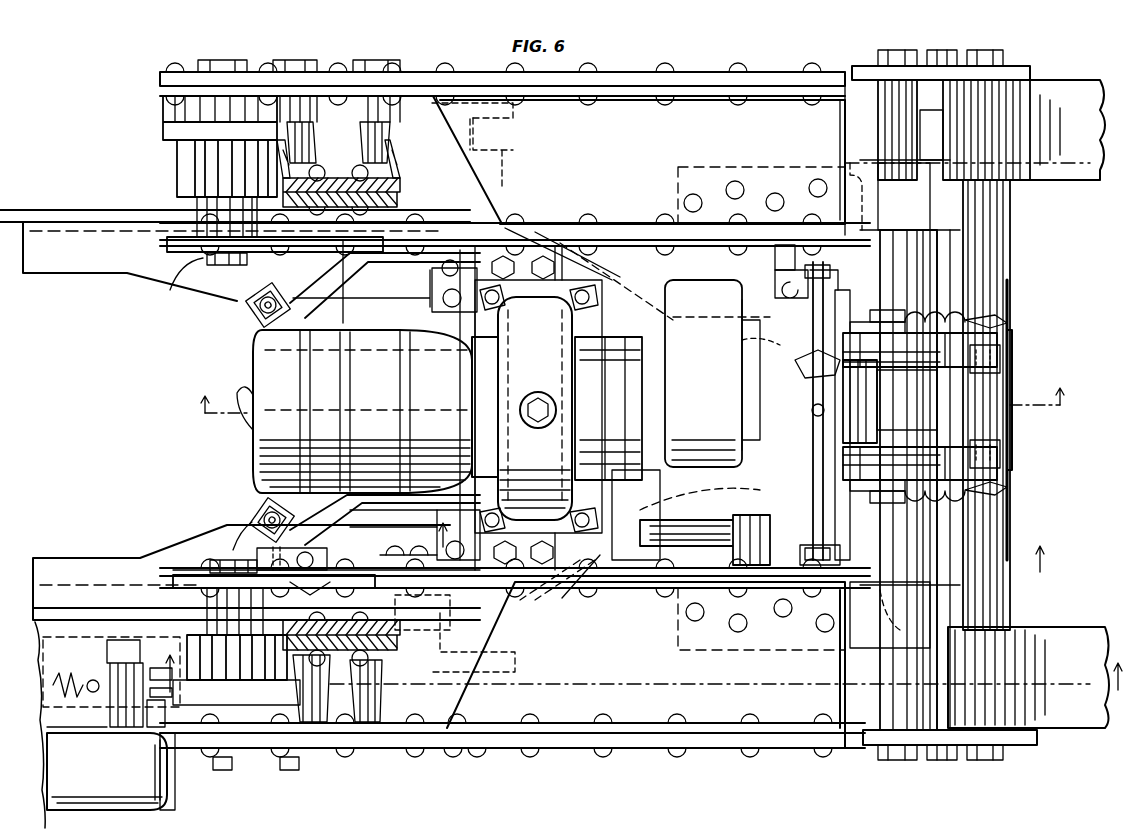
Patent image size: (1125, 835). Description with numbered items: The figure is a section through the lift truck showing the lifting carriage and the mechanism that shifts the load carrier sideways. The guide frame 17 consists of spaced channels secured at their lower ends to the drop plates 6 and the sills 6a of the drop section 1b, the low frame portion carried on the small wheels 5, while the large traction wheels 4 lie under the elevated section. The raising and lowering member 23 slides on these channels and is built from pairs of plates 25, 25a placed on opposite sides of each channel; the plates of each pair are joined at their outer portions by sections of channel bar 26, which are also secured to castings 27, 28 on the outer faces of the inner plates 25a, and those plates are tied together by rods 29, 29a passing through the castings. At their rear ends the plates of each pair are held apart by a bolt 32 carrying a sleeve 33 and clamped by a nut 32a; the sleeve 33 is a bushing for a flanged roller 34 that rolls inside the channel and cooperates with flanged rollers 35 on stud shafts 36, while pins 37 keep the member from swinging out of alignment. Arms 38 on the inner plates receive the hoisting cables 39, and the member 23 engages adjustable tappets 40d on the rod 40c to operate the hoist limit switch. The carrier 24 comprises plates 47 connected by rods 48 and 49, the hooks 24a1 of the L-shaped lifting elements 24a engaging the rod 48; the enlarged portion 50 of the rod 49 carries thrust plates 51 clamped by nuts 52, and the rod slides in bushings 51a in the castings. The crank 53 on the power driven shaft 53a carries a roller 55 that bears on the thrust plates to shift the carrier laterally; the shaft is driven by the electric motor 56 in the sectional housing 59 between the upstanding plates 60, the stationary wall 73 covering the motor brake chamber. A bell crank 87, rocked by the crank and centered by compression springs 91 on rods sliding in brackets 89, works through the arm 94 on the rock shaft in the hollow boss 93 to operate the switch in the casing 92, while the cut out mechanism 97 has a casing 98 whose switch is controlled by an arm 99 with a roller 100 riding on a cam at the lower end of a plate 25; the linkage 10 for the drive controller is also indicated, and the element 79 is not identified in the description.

The drop section 1b is at (380, 527).
The large wheels 4 is at (642, 662).
The small wheels 5 is at (740, 541).
The drop plates 6 is at (88, 222).
The sills 6a is at (838, 300).
The linkage 10 is at (629, 391).
The guide frame 17 is at (345, 178).
The raising and lowering member 23 is at (773, 78).
The load engaging and carrying member 24 is at (958, 480).
The load supporting and lifting elements 24a is at (1090, 632).
The hooks 24a1 is at (1040, 100).
The plates 25 is at (693, 78).
The inner plates 25a is at (624, 240).
The channel bar sections 26 is at (720, 756).
The casting 27 is at (760, 180).
The casting 28 is at (812, 485).
The rod 29 is at (955, 268).
The rod 29a is at (1000, 426).
The bolt 32 is at (220, 72).
The nut 32a is at (175, 568).
The sleeve 33 is at (190, 233).
The flanged roller 34 is at (190, 172).
The flanged rollers 35 is at (463, 177).
The stud shaft 36 is at (470, 146).
The pins 37 is at (360, 125).
The arms 38 is at (322, 290).
The hoisting members 39 is at (256, 322).
The rod 40c is at (306, 568).
The adjustable tappets 40d is at (368, 520).
The plates 47 is at (1020, 90).
The upper connecting rod 48 is at (1005, 60).
The upper connecting rod 49 is at (888, 101).
The enlarged portion 50 is at (920, 404).
The thrust plates 51 is at (848, 352).
The bushings 51a is at (870, 588).
The nuts 52 is at (885, 322).
The crank 53 is at (877, 390).
The power driven shaft 53a is at (742, 355).
The roller 55 is at (877, 412).
The electric motor 56 is at (255, 450).
The sectional housing 59 is at (522, 408).
The upstanding plates 60 is at (462, 508).
The stationary wall 73 is at (640, 362).
The block 79 is at (1002, 352).
The bell crank 87 is at (791, 288).
The brackets 89 is at (760, 520).
The compression spring 91 is at (798, 260).
The casing 92 is at (670, 420).
The hollow boss 93 is at (742, 384).
The arm 94 is at (828, 530).
The cut out mechanism 97 is at (176, 771).
The casing 98 is at (111, 723).
The arm 99 is at (158, 668).
The roller 100 is at (155, 730).